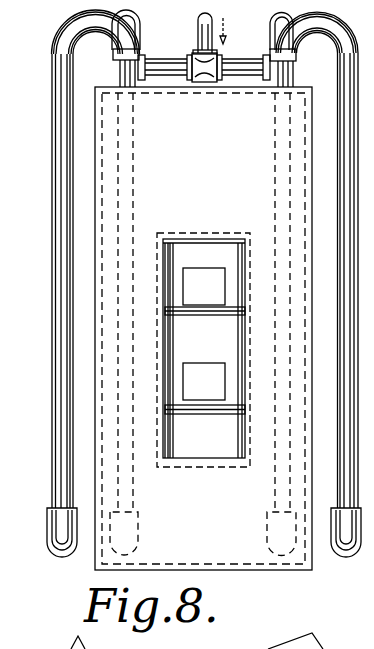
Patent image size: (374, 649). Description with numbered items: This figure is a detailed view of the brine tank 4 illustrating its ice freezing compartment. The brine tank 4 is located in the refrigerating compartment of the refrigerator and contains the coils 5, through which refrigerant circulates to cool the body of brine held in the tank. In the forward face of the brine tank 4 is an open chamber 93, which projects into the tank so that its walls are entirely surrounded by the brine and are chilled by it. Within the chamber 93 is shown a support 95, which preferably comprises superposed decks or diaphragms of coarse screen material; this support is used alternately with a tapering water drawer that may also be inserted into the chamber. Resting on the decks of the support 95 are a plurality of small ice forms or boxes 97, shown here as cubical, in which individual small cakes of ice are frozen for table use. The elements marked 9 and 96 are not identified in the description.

The brine tank 4 is at (203, 328).
The coils 5 is at (122, 270).
The right conduit tube 9 is at (320, 284).
The open chamber 93 is at (206, 251).
The support 95 is at (173, 334).
The cross bar 96 is at (164, 404).
The ice forms 97 is at (208, 364).